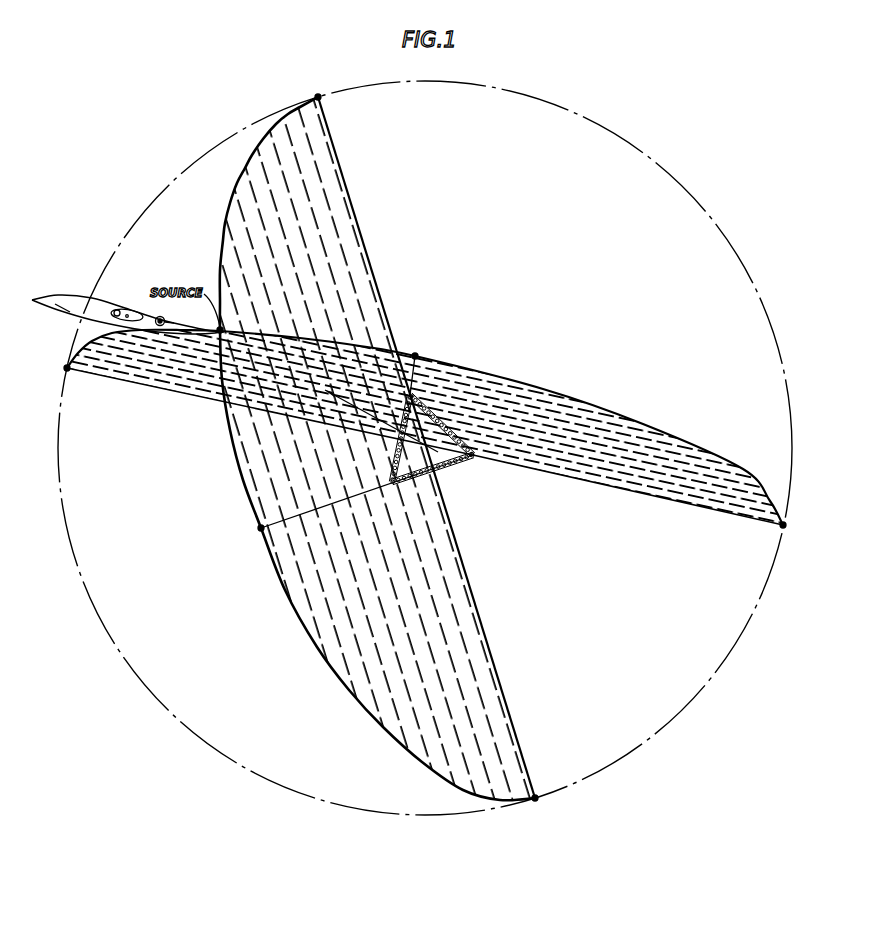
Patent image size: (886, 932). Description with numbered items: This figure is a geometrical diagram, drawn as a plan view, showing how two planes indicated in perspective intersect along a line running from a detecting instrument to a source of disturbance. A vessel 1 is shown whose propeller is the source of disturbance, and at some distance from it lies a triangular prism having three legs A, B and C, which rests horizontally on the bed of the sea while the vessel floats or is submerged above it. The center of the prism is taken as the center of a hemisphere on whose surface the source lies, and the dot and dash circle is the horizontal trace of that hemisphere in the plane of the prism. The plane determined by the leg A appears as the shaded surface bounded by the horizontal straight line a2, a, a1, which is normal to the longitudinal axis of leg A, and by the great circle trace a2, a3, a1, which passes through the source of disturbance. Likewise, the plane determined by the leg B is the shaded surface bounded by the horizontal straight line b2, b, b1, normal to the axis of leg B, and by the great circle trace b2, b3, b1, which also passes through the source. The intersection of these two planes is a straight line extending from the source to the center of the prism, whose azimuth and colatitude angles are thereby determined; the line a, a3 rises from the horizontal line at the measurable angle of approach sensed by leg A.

The vessel 1 is at (98, 306).
The end point of horizontal line a2, a a1 is at (783, 525).
The end point of horizontal line a2, a, a1 a2 is at (67, 368).
The point on great circle trace a2, a3, a1 a3 is at (415, 356).
The end point of horizontal line b2, b b1 is at (535, 798).
The end point of horizontal line b2, b, b1 b2 is at (318, 97).
The point on great circle trace b2, b3, b1 b3 is at (261, 528).
The leg A of triangular prism A is at (398, 450).
The leg B of triangular prism B is at (471, 460).
The leg C of triangular prism C is at (449, 430).
The point on horizontal line a2, a, a1 a is at (392, 436).
The point on horizontal line b2, b, b1 b is at (444, 467).